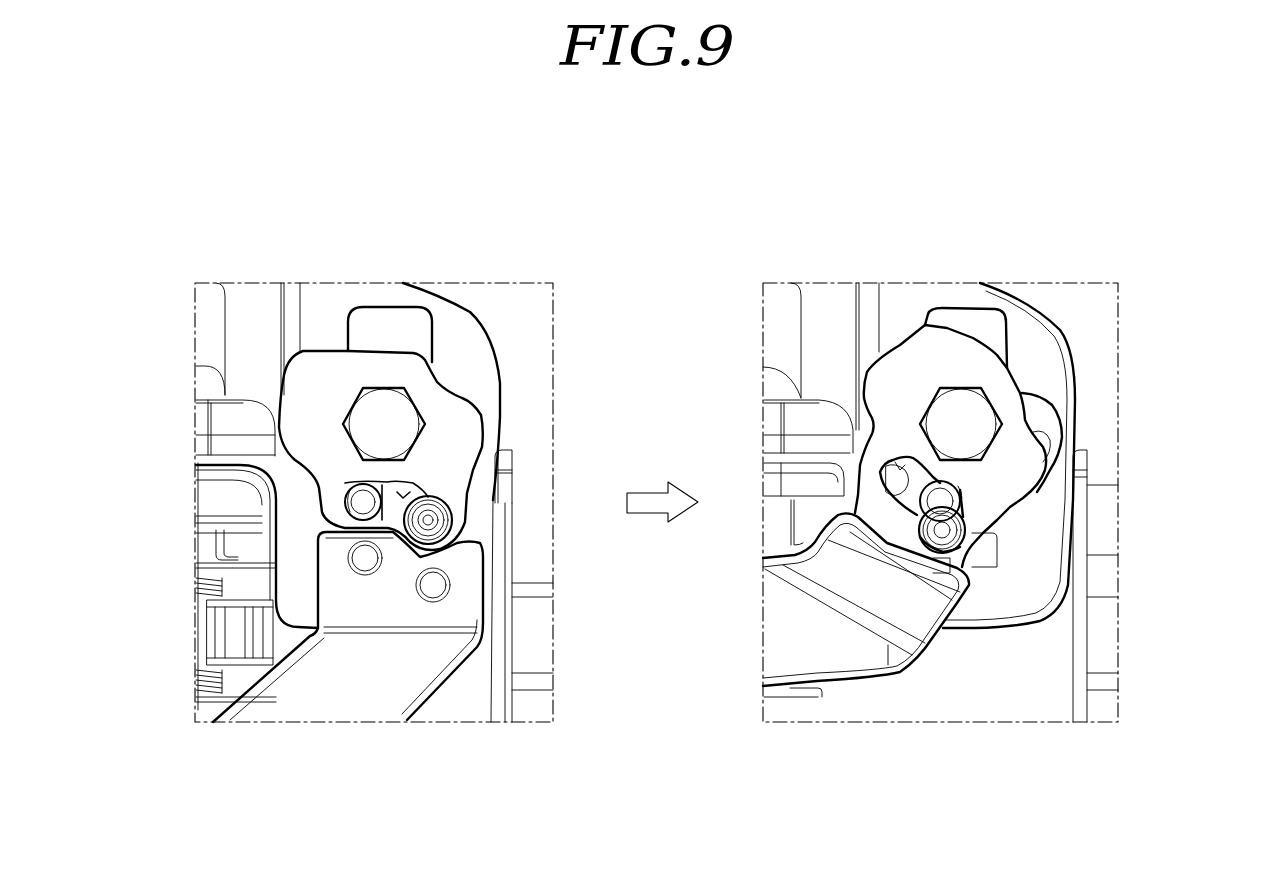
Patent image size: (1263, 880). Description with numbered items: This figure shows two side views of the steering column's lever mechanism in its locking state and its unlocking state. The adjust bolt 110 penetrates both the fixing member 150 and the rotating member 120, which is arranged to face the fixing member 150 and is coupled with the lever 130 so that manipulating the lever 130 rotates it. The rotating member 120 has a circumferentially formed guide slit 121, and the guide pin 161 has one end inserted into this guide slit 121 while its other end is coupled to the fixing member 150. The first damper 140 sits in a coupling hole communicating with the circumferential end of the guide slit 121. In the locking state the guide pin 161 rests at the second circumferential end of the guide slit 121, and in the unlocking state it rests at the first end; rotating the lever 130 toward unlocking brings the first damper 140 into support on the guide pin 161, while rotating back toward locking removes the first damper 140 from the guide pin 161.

The adjust bolt 110 is at (385, 415).
The rotating member 120 is at (442, 412).
The guide slit 121 is at (400, 493).
The lever 130 is at (372, 680).
The first damper 140 is at (428, 520).
The fixing member 150 is at (1042, 415).
The guide pin 161 is at (363, 502).